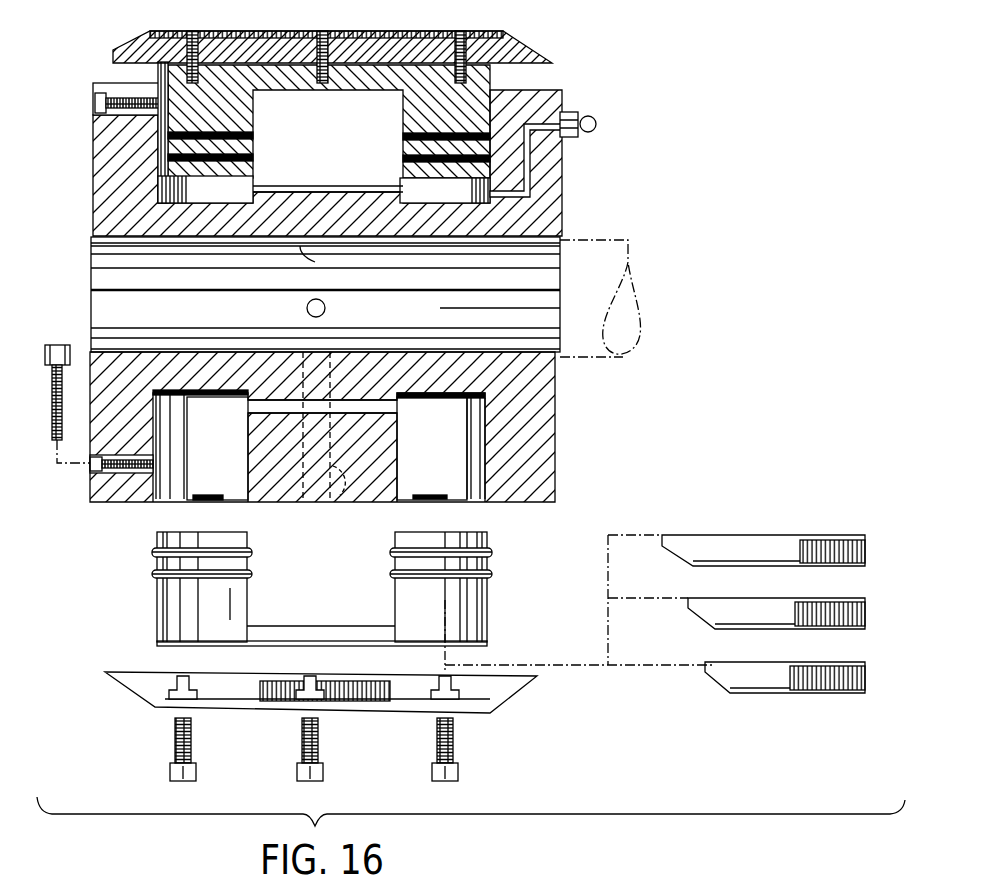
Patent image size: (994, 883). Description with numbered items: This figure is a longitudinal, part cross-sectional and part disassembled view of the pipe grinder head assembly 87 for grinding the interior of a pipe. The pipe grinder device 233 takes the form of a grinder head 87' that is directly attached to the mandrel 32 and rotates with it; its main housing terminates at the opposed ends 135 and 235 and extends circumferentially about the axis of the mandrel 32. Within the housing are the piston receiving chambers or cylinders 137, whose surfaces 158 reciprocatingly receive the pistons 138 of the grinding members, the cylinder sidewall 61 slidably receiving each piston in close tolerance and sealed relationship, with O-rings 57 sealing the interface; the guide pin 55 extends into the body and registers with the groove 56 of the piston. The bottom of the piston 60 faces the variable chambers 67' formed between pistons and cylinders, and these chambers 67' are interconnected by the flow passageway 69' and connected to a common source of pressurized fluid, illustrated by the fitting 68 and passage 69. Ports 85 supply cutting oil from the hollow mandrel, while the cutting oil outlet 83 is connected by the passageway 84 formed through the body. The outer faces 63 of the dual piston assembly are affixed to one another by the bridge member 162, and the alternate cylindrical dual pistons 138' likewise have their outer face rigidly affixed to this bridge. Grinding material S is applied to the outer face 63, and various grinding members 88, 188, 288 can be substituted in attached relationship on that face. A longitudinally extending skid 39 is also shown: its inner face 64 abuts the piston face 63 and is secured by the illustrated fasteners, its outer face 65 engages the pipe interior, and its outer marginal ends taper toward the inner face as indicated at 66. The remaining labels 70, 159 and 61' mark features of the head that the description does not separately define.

The grinding member 88 is at (522, 34).
The grinding material S is at (408, 31).
The groove 56 is at (158, 76).
The piston 138 is at (376, 364).
The end wall 135 is at (93, 122).
The O-ring 57 is at (460, 134).
The common source of pressurized fluid 68 is at (598, 122).
The dual piston 138' is at (99, 167).
The common source of pressurized fluid passage 69 is at (542, 160).
The variable chamber 67' is at (248, 240).
The bottom of the piston 60 is at (200, 186).
The cylinder surface 158 is at (475, 176).
The pipe grinder device 233 is at (565, 206).
The flow passageway 69' is at (370, 312).
The mandrel 32 is at (615, 240).
The pipe grinder head assembly 87 is at (298, 294).
The line 70 is at (314, 265).
The port 85 is at (307, 308).
The guide pin 55 is at (50, 345).
The shoulder 159 is at (196, 395).
The cavity 61' is at (219, 423).
The cylinder sidewall 61 is at (448, 456).
The grinder head 87' is at (369, 427).
The end 235 is at (555, 470).
The cylinder 137 is at (195, 498).
The cutting oil outlet 83 is at (303, 502).
The passageway 84 is at (342, 439).
The bridge member 162 is at (343, 628).
The outer face of the piston 63 is at (323, 646).
The inner face of the skid 64 is at (270, 676).
The outer face of the skid 65 is at (360, 713).
The tapered marginal end 66 is at (135, 702).
The skid 39 is at (540, 677).
The grinding member 188 is at (865, 616).
The grinding member 288 is at (866, 665).